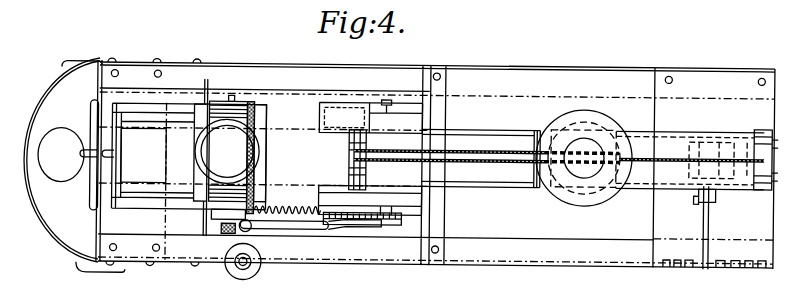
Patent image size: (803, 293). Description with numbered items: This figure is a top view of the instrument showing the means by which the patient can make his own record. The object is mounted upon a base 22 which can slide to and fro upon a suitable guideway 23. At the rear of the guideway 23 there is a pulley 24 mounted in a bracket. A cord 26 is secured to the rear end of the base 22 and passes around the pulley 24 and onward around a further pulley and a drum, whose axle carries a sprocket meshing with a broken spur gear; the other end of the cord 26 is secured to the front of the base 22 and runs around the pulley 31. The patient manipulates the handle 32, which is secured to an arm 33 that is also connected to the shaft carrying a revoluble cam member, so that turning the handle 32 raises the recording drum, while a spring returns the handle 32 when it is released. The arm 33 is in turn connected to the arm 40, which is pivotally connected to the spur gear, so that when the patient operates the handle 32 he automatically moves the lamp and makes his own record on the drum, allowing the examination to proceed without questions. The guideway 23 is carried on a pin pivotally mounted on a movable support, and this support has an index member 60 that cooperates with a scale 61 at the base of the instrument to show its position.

The base 22 is at (593, 108).
The guideway 23 is at (502, 169).
The pulley 24 is at (763, 163).
The cord 26 is at (368, 172).
The pulley 31 is at (373, 132).
The handle 32 is at (236, 263).
The arm 33 is at (258, 244).
The arm 40 is at (300, 229).
The index member 60 is at (708, 212).
The scale 61 is at (712, 257).